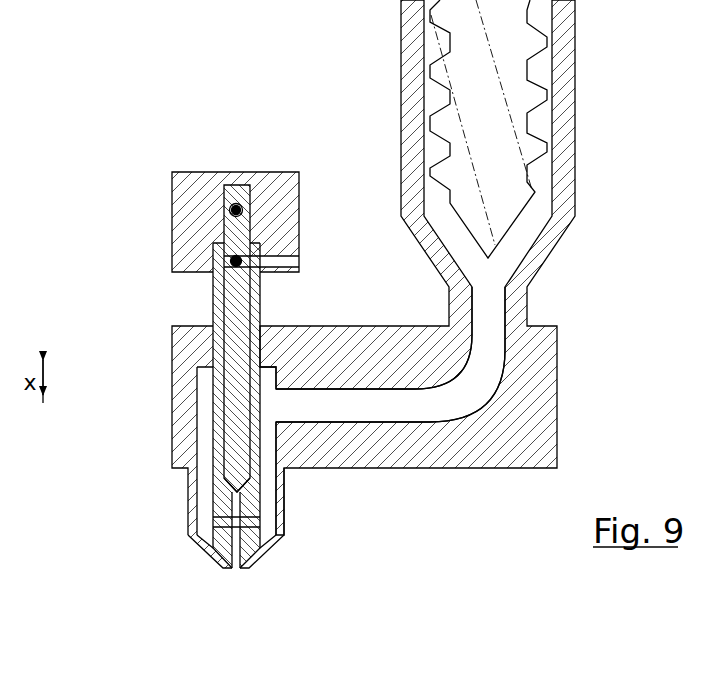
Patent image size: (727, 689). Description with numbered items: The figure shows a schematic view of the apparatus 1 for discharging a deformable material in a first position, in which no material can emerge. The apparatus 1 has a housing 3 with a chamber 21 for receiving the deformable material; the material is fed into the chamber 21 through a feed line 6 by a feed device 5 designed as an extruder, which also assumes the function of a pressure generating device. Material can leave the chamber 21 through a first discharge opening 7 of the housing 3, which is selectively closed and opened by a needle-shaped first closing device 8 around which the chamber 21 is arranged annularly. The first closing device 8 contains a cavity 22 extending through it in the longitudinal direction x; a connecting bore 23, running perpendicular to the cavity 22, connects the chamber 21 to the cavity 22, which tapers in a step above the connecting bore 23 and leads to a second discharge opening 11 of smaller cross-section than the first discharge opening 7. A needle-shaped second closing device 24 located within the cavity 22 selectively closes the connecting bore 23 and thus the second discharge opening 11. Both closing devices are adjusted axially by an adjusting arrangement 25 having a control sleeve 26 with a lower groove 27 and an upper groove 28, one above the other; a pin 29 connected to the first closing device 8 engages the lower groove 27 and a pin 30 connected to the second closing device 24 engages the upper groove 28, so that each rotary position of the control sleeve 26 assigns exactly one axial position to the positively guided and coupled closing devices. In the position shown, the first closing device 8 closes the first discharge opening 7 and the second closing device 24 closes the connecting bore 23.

The apparatus 1 is at (166, 146).
The housing 3 is at (525, 432).
The feed device 5 is at (530, 122).
The feed line 6 is at (488, 368).
The first discharge opening 7 is at (266, 555).
The first closing device 8 is at (213, 303).
The second discharge opening 11 is at (236, 574).
The chamber 21 is at (203, 376).
The cavity 22 is at (230, 484).
The connecting bore 23 is at (253, 522).
The second closing device 24 is at (240, 296).
The adjusting arrangement 25 is at (160, 210).
The control sleeve 26 is at (283, 175).
The lower groove 27 is at (300, 258).
The upper groove 28 is at (243, 205).
The pin 29 is at (231, 262).
The pin 30 is at (236, 203).